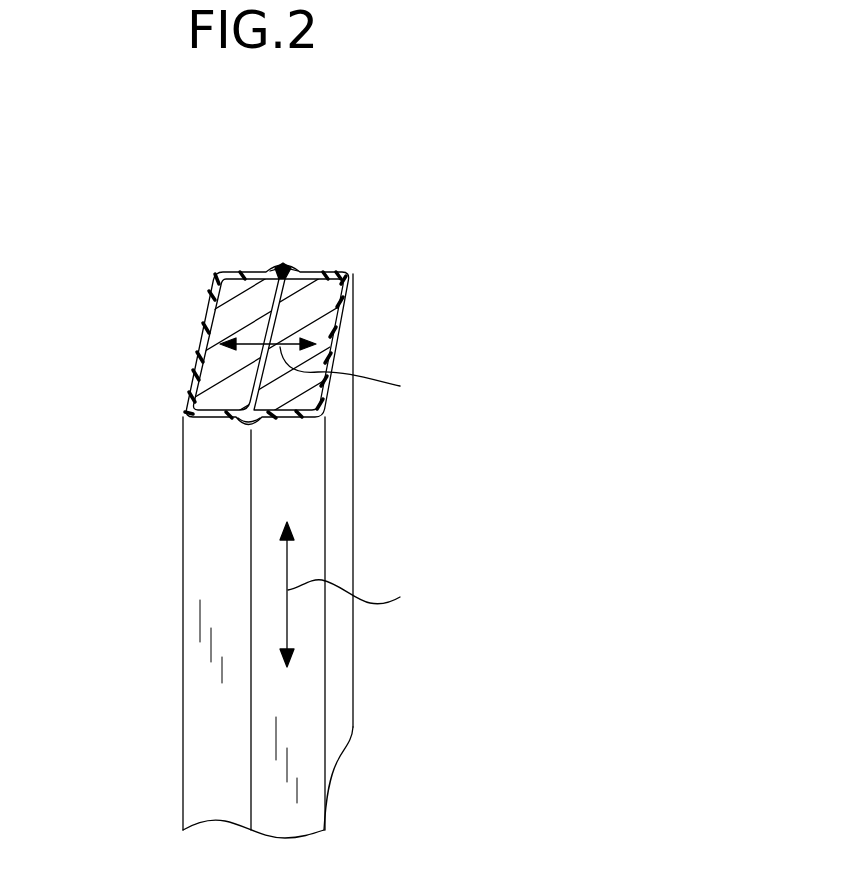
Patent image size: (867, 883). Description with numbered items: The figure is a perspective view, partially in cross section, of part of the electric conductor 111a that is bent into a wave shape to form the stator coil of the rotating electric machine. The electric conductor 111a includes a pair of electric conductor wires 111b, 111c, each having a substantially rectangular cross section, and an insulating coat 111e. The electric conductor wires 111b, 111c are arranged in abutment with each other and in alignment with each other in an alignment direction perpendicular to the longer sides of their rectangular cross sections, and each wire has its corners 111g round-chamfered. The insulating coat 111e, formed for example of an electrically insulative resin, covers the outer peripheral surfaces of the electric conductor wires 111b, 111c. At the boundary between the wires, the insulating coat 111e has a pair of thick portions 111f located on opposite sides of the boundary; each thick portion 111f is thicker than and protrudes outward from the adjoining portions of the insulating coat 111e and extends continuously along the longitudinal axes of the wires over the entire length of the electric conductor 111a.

The electric conductor 111a is at (356, 464).
The electric conductor wire 111b is at (318, 313).
The electric conductor wire 111c is at (238, 315).
The insulating coat 111e is at (190, 362).
The thick portion 111f is at (287, 262).
The corner 111g is at (262, 266).